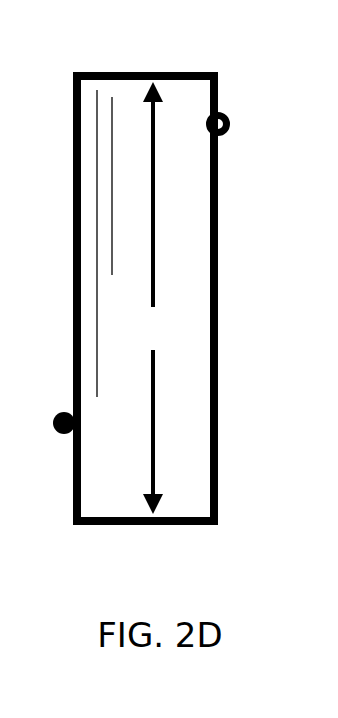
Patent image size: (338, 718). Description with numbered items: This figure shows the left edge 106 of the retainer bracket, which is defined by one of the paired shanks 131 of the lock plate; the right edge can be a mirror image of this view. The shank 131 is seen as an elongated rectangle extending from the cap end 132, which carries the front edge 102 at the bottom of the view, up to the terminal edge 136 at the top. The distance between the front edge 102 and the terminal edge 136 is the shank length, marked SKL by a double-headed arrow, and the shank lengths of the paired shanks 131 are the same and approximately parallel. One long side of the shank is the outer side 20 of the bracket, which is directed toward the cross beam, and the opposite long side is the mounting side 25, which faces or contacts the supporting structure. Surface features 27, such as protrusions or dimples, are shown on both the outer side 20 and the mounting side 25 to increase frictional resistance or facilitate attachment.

The outer side 20 is at (222, 275).
The mounting side 25 is at (68, 288).
The surface features 27 is at (230, 110).
The front edge 102 is at (202, 540).
The left edge 106 is at (194, 191).
The paired shanks 131 is at (192, 398).
The cap end 132 is at (103, 502).
The terminal edges 136 is at (155, 70).